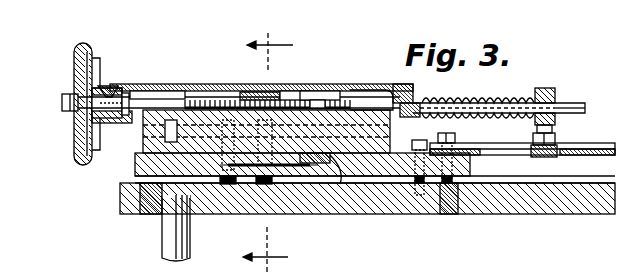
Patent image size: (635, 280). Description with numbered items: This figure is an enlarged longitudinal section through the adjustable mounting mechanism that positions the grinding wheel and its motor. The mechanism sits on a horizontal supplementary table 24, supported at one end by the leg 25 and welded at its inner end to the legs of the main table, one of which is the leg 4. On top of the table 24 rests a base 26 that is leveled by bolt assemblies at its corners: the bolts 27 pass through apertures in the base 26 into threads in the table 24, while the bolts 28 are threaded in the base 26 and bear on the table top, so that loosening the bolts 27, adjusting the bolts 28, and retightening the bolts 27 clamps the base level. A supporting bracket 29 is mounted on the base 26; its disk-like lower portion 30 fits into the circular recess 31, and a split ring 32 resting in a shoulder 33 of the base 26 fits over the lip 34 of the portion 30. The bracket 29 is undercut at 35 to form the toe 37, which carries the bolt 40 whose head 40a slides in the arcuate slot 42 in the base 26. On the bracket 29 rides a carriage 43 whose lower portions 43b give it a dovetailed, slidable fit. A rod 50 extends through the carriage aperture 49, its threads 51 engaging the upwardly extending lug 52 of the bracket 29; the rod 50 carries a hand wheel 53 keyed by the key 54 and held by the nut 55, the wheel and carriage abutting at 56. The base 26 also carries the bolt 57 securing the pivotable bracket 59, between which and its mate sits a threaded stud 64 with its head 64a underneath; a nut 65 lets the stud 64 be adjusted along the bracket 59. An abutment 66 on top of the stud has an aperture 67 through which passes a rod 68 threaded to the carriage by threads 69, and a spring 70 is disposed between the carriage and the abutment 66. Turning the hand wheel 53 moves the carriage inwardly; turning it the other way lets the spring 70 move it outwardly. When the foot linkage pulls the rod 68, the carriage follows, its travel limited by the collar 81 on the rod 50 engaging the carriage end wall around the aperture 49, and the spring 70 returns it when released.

The leg 4 is at (274, 153).
The supplementary table 24 is at (120, 196).
The leg 25 is at (165, 246).
The base 26 is at (135, 170).
The bolt 27 is at (450, 216).
The bolt 28 is at (420, 220).
The supporting bracket 29 is at (150, 130).
The lower portion 30 is at (285, 185).
The circular recess 31 is at (226, 184).
The split ring 32 is at (340, 195).
The shoulder 33 is at (330, 170).
The lip 34 is at (300, 184).
The undercut 35 is at (342, 104).
The toe 37 is at (318, 100).
The bolt 40 is at (262, 112).
The head 40a is at (293, 100).
The arcuate slot 42 is at (187, 100).
The carriage 43 is at (135, 84).
The lower portion 43b is at (388, 84).
The aperture 49 is at (110, 86).
The rod 50 is at (153, 97).
The threads 51 is at (220, 100).
The lug 52 is at (302, 112).
The hand wheel 53 is at (72, 46).
The key 54 is at (84, 84).
The nut 55 is at (62, 102).
The abutment 56 is at (99, 57).
The bolt 57 is at (452, 142).
The bracket 59 is at (590, 147).
The threaded stud 64 is at (553, 130).
The head 64a is at (534, 157).
The nut 65 is at (533, 139).
The abutment 66 is at (545, 88).
The aperture 67 is at (556, 101).
The rod 68 is at (497, 103).
The threads 69 is at (418, 100).
The spring 70 is at (475, 97).
The collar 81 is at (165, 130).